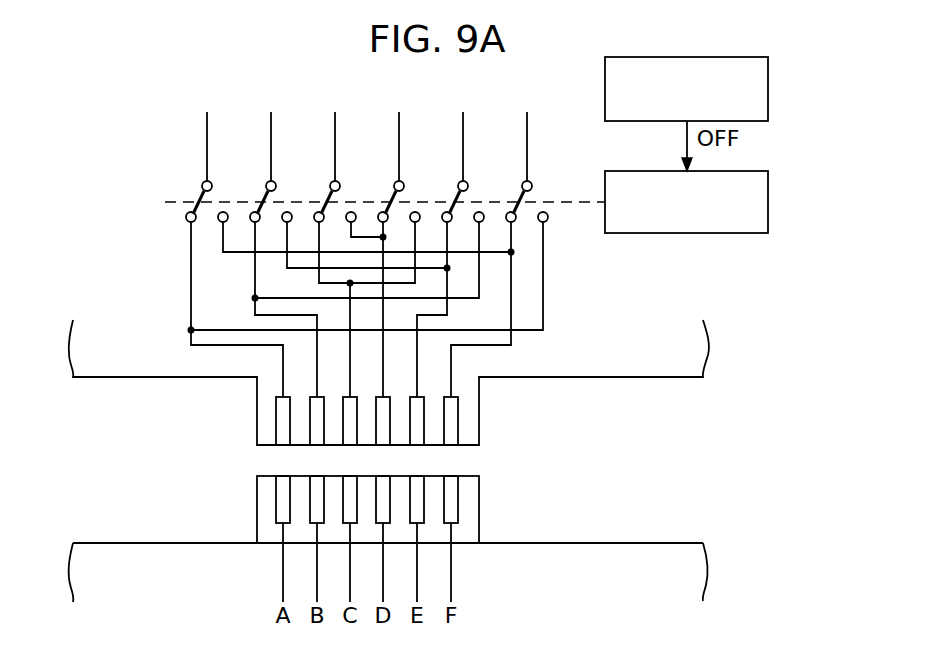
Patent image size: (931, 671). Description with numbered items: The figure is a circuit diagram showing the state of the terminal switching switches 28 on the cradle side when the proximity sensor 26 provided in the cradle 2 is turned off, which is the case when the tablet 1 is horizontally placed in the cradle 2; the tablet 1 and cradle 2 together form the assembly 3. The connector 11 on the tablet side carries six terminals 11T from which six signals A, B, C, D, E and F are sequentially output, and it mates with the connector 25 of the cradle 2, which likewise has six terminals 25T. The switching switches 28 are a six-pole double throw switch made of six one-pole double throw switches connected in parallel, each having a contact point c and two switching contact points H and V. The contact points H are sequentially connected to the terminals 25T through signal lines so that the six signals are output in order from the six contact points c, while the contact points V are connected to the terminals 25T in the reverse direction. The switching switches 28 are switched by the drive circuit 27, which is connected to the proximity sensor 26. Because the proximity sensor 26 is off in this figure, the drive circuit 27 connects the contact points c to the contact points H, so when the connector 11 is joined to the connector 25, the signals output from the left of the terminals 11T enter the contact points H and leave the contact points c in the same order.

The tablet 1 is at (662, 542).
The cradle 2 is at (667, 377).
The keyboard device 3 is at (703, 408).
The connector 11 is at (479, 522).
The terminal 11T is at (450, 497).
The connector 25 is at (479, 400).
The terminal 25T is at (450, 432).
The proximity sensor 26 is at (768, 95).
The drive circuit 27 is at (720, 233).
The switching switches 28 is at (156, 179).